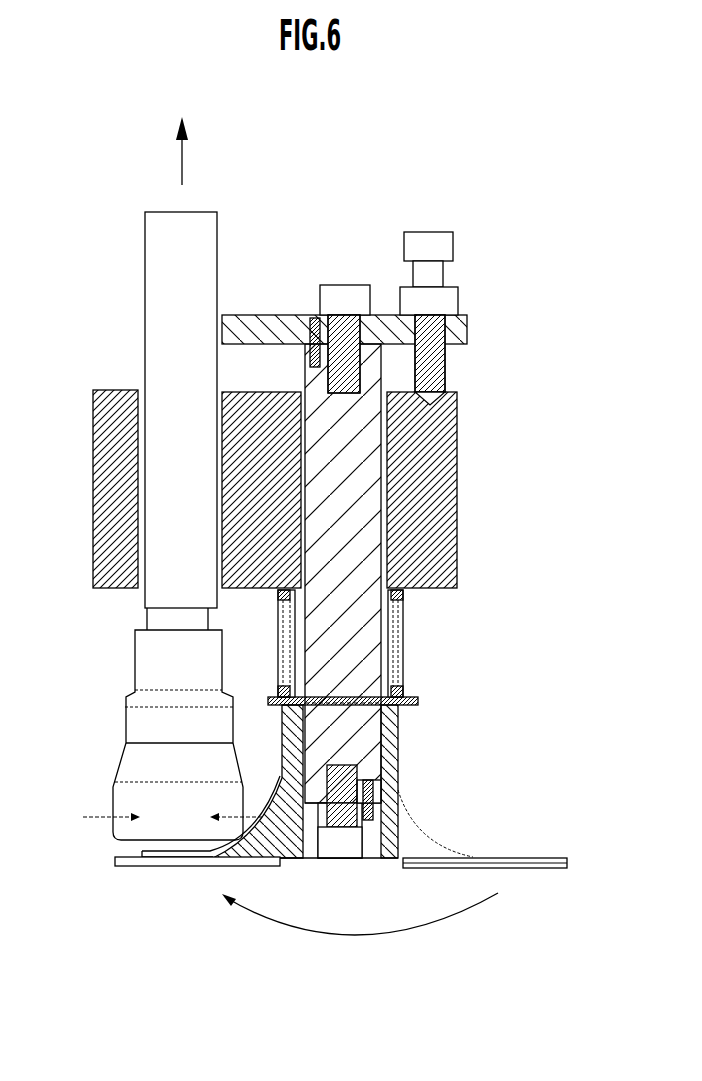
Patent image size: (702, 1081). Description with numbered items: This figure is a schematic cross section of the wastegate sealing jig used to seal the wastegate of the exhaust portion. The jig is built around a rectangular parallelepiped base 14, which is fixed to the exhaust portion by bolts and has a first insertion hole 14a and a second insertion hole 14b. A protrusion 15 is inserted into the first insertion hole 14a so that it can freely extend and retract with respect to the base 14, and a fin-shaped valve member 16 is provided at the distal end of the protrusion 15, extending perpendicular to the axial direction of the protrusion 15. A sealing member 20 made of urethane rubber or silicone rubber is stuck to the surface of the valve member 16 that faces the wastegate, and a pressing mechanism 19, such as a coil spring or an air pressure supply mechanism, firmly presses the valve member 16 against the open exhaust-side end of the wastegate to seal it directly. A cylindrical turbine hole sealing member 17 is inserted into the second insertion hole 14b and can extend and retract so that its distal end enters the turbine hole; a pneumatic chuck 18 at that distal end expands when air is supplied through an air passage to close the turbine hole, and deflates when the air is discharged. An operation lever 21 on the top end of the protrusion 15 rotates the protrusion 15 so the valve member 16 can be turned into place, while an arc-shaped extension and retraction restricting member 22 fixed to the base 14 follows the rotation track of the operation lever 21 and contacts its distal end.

The base 14 is at (458, 405).
The first insertion hole 14a is at (458, 440).
The second insertion hole 14b is at (138, 390).
The protrusion 15 is at (388, 662).
The valve member 16 is at (240, 830).
The turbine hole sealing member 17 is at (158, 443).
The pneumatic chuck 18 is at (112, 790).
The pressing mechanism 19 is at (277, 628).
The sealing member 20 is at (158, 868).
The operation lever 21 is at (433, 232).
The extension and retraction restricting member 22 is at (433, 390).